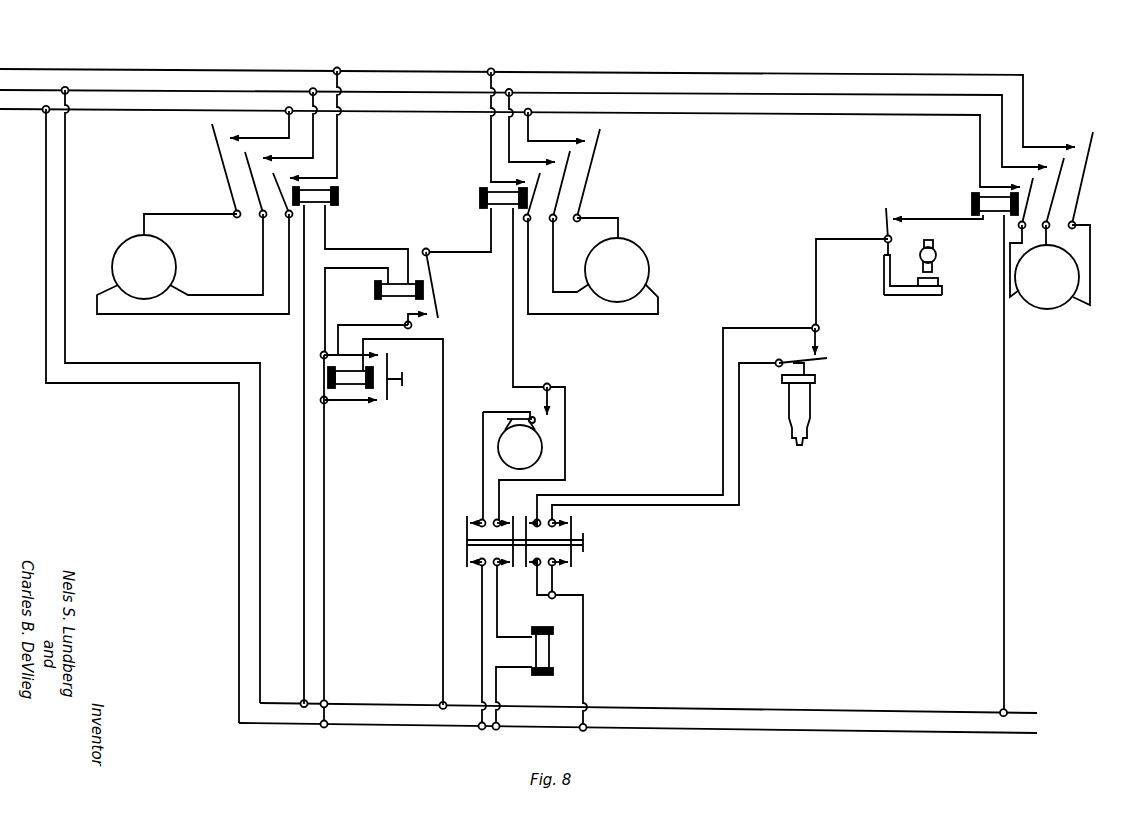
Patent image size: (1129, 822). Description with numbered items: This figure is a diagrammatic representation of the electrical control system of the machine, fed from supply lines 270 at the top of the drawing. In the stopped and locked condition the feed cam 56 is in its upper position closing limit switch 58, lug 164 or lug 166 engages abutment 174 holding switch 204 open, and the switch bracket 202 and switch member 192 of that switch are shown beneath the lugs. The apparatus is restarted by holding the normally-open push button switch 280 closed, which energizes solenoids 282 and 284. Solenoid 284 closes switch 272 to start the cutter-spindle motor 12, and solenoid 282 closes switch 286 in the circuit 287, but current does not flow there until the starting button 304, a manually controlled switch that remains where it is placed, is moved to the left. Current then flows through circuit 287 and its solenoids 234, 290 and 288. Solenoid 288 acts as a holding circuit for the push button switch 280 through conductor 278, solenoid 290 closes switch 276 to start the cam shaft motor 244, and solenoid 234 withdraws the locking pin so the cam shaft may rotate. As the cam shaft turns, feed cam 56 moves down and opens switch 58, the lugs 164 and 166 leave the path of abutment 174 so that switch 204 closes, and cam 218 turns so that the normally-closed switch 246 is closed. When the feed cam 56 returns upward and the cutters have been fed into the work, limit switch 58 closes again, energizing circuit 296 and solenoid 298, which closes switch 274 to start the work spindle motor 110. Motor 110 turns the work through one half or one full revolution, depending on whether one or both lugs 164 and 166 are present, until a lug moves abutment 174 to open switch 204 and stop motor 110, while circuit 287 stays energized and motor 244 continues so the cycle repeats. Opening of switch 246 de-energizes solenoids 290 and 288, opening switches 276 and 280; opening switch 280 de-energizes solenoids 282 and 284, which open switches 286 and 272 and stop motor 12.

The supply line 270 is at (132, 69).
The switch 272 is at (224, 168).
The cutter-spindle motor 12 is at (176, 262).
The solenoid 284 is at (338, 192).
The solenoid 282 is at (380, 299).
The switch 286 is at (437, 303).
The solenoid 288 is at (349, 389).
The push button switch 280 is at (388, 400).
The conductor 278 is at (325, 560).
The solenoid 290 is at (480, 199).
The switch 276 is at (594, 152).
The cam shaft motor 244 is at (644, 252).
The circuit 287 is at (514, 362).
The switch 246 is at (535, 421).
The cam 218 is at (543, 447).
The starting button 304 is at (586, 546).
The solenoid 234 is at (553, 652).
The solenoid 298 is at (1000, 216).
The circuit 296 is at (1003, 463).
The switch 274 is at (1082, 188).
The work spindle motor 110 is at (1052, 309).
The switch 204 is at (884, 218).
The switch bracket 202 is at (884, 272).
The switch member 192 is at (918, 296).
The abutment 174 is at (940, 280).
The lug 166 is at (923, 267).
The lug 164 is at (937, 236).
The limit switch 58 is at (828, 357).
The feed cam 56 is at (806, 371).